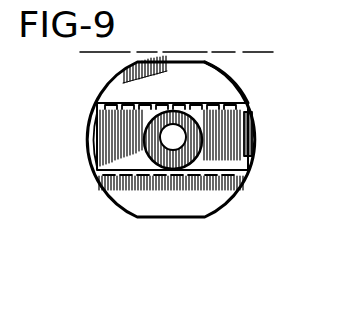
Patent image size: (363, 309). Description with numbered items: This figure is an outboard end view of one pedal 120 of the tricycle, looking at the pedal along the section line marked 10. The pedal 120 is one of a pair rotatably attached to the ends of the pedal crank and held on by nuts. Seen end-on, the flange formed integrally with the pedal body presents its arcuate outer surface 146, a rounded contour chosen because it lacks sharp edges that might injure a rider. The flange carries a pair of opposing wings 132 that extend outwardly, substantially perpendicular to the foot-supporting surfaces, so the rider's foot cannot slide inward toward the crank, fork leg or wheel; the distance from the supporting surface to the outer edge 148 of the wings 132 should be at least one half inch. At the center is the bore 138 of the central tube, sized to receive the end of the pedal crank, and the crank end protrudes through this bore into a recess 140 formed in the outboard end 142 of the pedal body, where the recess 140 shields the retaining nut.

The section line / apparatus 10 is at (273, 79).
The pedal 120 is at (259, 123).
The wings 132 is at (204, 93).
The bore 138 is at (174, 150).
The recess 140 is at (242, 187).
The outboard end 142 is at (252, 150).
The arcuate outer surface 146 is at (236, 80).
The outer edge 148 is at (154, 63).